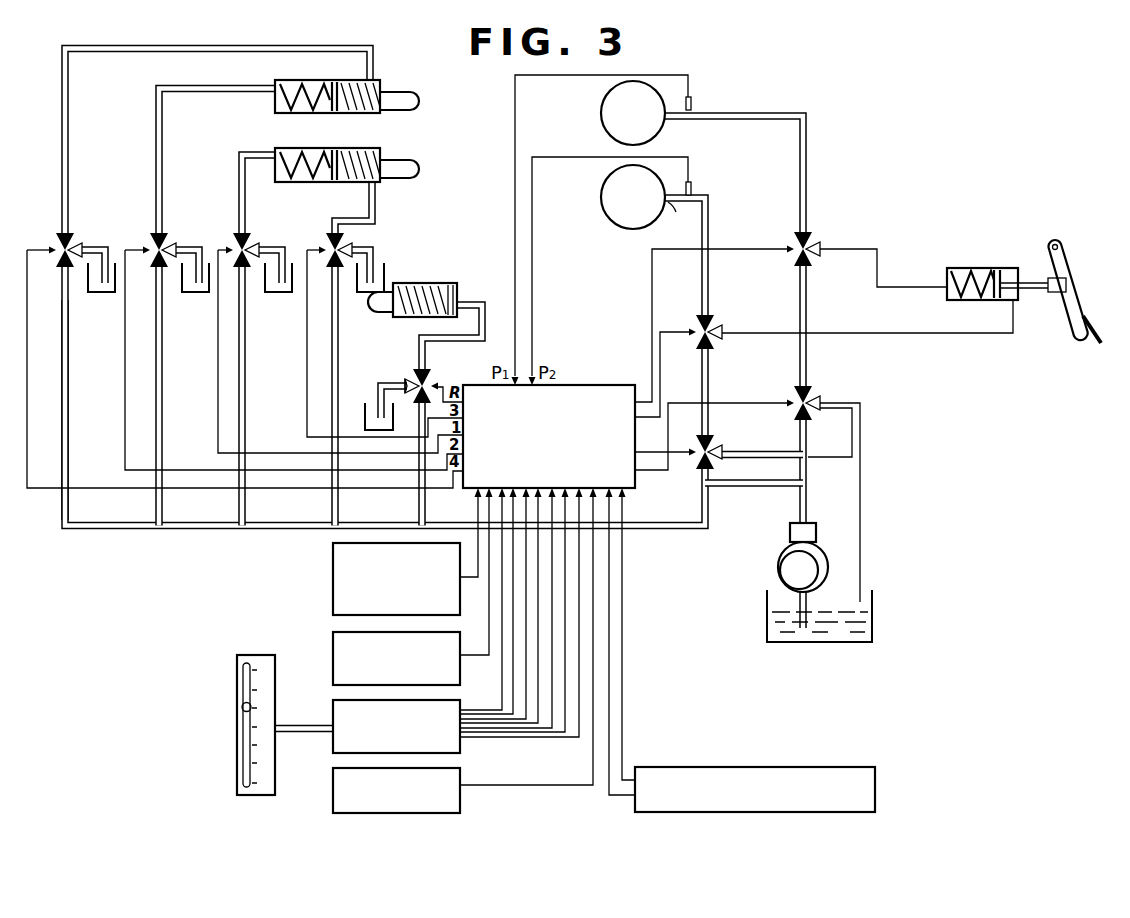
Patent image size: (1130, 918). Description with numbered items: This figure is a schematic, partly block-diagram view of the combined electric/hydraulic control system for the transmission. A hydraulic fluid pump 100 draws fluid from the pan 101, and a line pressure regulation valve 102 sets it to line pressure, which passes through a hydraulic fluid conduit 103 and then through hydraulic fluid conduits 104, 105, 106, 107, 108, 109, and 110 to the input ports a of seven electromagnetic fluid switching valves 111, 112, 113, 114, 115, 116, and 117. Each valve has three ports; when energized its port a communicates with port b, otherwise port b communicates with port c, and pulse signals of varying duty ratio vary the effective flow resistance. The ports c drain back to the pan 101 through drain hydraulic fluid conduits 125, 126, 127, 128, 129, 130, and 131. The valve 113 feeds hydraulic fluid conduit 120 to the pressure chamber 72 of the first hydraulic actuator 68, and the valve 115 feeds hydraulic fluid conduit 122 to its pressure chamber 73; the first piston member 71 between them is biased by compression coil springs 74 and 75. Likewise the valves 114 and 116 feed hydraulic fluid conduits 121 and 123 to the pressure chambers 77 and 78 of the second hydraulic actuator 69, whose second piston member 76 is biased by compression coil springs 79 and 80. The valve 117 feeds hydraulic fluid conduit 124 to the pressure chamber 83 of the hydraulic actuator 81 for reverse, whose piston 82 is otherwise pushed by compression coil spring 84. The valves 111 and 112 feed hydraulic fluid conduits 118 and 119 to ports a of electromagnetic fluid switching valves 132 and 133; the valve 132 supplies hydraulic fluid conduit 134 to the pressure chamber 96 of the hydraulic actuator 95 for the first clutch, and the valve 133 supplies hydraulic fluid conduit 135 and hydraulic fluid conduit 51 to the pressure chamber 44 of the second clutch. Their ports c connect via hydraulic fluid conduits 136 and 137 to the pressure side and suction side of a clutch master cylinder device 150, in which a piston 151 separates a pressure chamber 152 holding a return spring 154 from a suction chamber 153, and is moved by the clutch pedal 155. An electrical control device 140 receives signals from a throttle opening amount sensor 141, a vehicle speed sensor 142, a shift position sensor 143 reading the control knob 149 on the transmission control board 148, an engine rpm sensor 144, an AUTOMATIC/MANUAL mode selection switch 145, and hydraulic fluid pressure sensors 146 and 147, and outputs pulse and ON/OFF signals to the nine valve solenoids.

The pressure chamber 44 is at (633, 197).
The hydraulic fluid conduit 51 is at (679, 216).
The first hydraulic actuator 68 is at (332, 180).
The second hydraulic actuator 69 is at (331, 101).
The first piston member 71 is at (332, 182).
The pressure chamber 72 is at (292, 182).
The pressure chamber 73 is at (357, 182).
The compression coil spring 74 is at (275, 174).
The compression coil spring 75 is at (381, 162).
The second piston member 76 is at (351, 84).
The pressure chamber 77 is at (304, 84).
The pressure chamber 78 is at (380, 112).
The compression coil spring 79 is at (275, 104).
The compression coil spring 80 is at (381, 93).
The hydraulic actuator 81 is at (432, 283).
The piston 82 is at (457, 285).
The pressure chamber 83 is at (457, 293).
The compression coil spring 84 is at (386, 312).
The hydraulic actuator 95 is at (601, 118).
The pressure chamber 96 is at (632, 113).
The hydraulic fluid pump 100 is at (778, 572).
The hydraulic fluid pan 101 is at (100, 292).
The line pressure regulation valve 102 is at (790, 535).
The hydraulic fluid conduit 103 is at (805, 498).
The hydraulic fluid conduit 104 is at (812, 440).
The hydraulic fluid conduit 105 is at (712, 474).
The hydraulic fluid conduit 106 is at (244, 380).
The hydraulic fluid conduit 107 is at (157, 380).
The hydraulic fluid conduit 108 is at (338, 383).
The hydraulic fluid conduit 109 is at (72, 380).
The hydraulic fluid conduit 110 is at (420, 509).
The electromagnetic fluid switching valve 111 is at (796, 392).
The electromagnetic fluid switching valve 112 is at (713, 441).
The electromagnetic fluid switching valve 113 is at (244, 238).
The electromagnetic fluid switching valve 114 is at (160, 238).
The electromagnetic fluid switching valve 115 is at (345, 247).
The electromagnetic fluid switching valve 116 is at (66, 238).
The electromagnetic fluid switching valve 117 is at (432, 382).
The hydraulic fluid conduit 118 is at (814, 351).
The hydraulic fluid conduit 119 is at (709, 350).
The hydraulic fluid conduit 120 is at (238, 189).
The hydraulic fluid conduit 121 is at (160, 160).
The hydraulic fluid conduit 122 is at (378, 191).
The hydraulic fluid conduit 123 is at (68, 173).
The hydraulic fluid conduit 124 is at (470, 340).
The drain hydraulic fluid conduit 125 is at (862, 420).
The drain hydraulic fluid conduit 126 is at (777, 452).
The drain hydraulic fluid conduit 127 is at (289, 246).
The drain hydraulic fluid conduit 128 is at (203, 246).
The drain hydraulic fluid conduit 129 is at (378, 250).
The drain hydraulic fluid conduit 130 is at (118, 246).
The drain hydraulic fluid conduit 131 is at (398, 380).
The electromagnetic fluid switching valve 132 is at (809, 237).
The electromagnetic fluid switching valve 133 is at (711, 319).
The hydraulic fluid conduit 134 is at (812, 162).
The hydraulic fluid conduit 135 is at (708, 268).
The hydraulic fluid conduit 136 is at (888, 261).
The hydraulic fluid conduit 137 is at (877, 333).
The electrical control device 140 is at (606, 385).
The throttle opening amount sensor 141 is at (333, 580).
The vehicle speed sensor 142 is at (333, 658).
The shift position sensor 143 is at (333, 714).
The engine rpm sensor 144 is at (333, 792).
The AUTOMATIC/MANUAL mode selection switch 145 is at (750, 767).
The hydraulic fluid pressure sensor 146 is at (691, 105).
The hydraulic fluid pressure sensor 147 is at (691, 191).
The transmission control board 148 is at (260, 655).
The control knob 149 is at (242, 707).
The clutch master cylinder device 150 is at (983, 268).
The piston 151 is at (1003, 269).
The pressure chamber 152 is at (983, 302).
The suction chamber 153 is at (1043, 294).
The return spring 154 is at (958, 270).
The clutch pedal 155 is at (1080, 302).